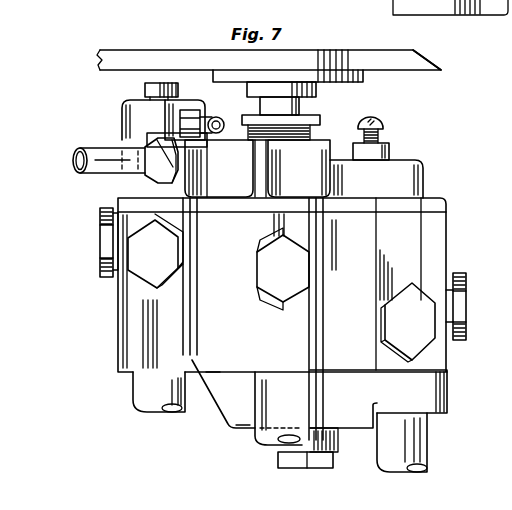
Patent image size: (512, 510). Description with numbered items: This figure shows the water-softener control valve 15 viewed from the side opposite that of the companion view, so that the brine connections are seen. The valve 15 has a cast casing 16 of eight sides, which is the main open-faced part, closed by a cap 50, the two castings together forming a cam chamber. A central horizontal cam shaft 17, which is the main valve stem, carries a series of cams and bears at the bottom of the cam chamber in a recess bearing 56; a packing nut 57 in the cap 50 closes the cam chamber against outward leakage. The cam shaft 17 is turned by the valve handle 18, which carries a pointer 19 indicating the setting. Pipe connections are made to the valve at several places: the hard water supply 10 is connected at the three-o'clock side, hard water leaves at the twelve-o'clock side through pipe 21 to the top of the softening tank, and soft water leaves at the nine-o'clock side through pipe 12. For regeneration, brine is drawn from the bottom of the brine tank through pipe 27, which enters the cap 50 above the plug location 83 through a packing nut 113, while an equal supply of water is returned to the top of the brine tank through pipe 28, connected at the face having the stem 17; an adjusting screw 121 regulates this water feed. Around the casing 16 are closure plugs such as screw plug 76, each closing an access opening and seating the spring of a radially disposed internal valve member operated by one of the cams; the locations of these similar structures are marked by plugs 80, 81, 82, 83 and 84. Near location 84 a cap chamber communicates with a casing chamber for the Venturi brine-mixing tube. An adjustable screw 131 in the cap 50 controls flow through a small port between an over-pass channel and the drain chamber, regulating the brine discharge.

The hard water supply 10 is at (143, 383).
The pipe 12 is at (427, 432).
The valve 15 is at (450, 217).
The casing 16 is at (433, 238).
The cam shaft 17 is at (300, 108).
The valve handle 18 is at (168, 58).
The pointer 19 is at (429, 61).
The pipe 21 is at (304, 400).
The pipe 27 is at (98, 152).
The pipe 28 is at (207, 120).
The cap 50 is at (410, 158).
The recess bearing 56 is at (500, 161).
The packing nut 57 is at (315, 122).
The screw plug 76 is at (278, 465).
The closure plug location 80 is at (466, 277).
The closure plug location 81 is at (423, 338).
The closure plug location 82 is at (262, 273).
The closure plug location 83 is at (142, 267).
The closure plug location 84 is at (102, 258).
The packing nut 113 is at (147, 180).
The adjusting screw 121 is at (143, 88).
The adjustable screw 131 is at (384, 121).